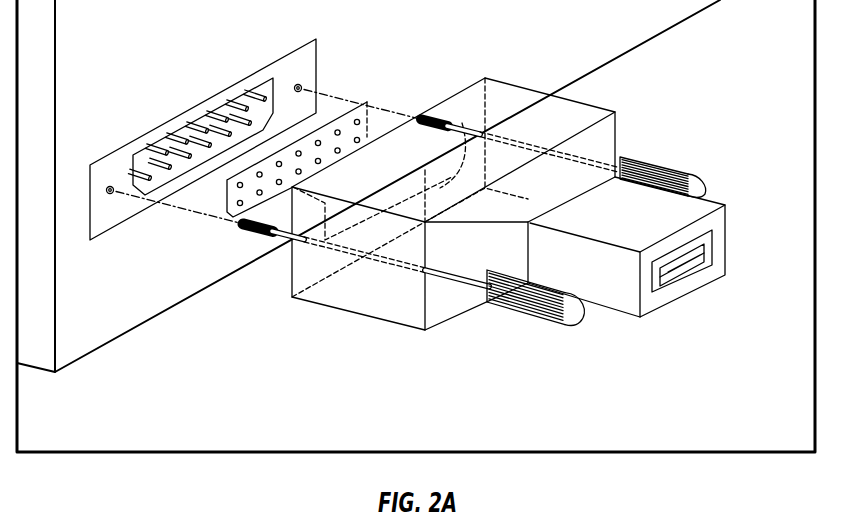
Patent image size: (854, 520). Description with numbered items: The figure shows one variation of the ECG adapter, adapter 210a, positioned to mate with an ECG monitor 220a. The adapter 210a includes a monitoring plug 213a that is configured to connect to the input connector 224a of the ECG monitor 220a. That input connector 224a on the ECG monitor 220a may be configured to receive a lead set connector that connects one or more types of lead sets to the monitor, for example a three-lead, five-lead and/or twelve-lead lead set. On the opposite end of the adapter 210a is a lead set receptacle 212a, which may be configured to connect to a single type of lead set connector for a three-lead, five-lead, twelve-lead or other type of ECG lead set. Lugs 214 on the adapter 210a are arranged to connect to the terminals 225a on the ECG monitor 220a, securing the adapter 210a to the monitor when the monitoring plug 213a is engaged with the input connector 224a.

The adapter 210a is at (615, 88).
The lead set receptacle 212a is at (693, 265).
The monitoring plug 213a is at (374, 112).
The lugs 214 is at (662, 162).
The ECG monitor 220a is at (128, 308).
The input connector 224a is at (200, 117).
The terminals 225a is at (304, 86).